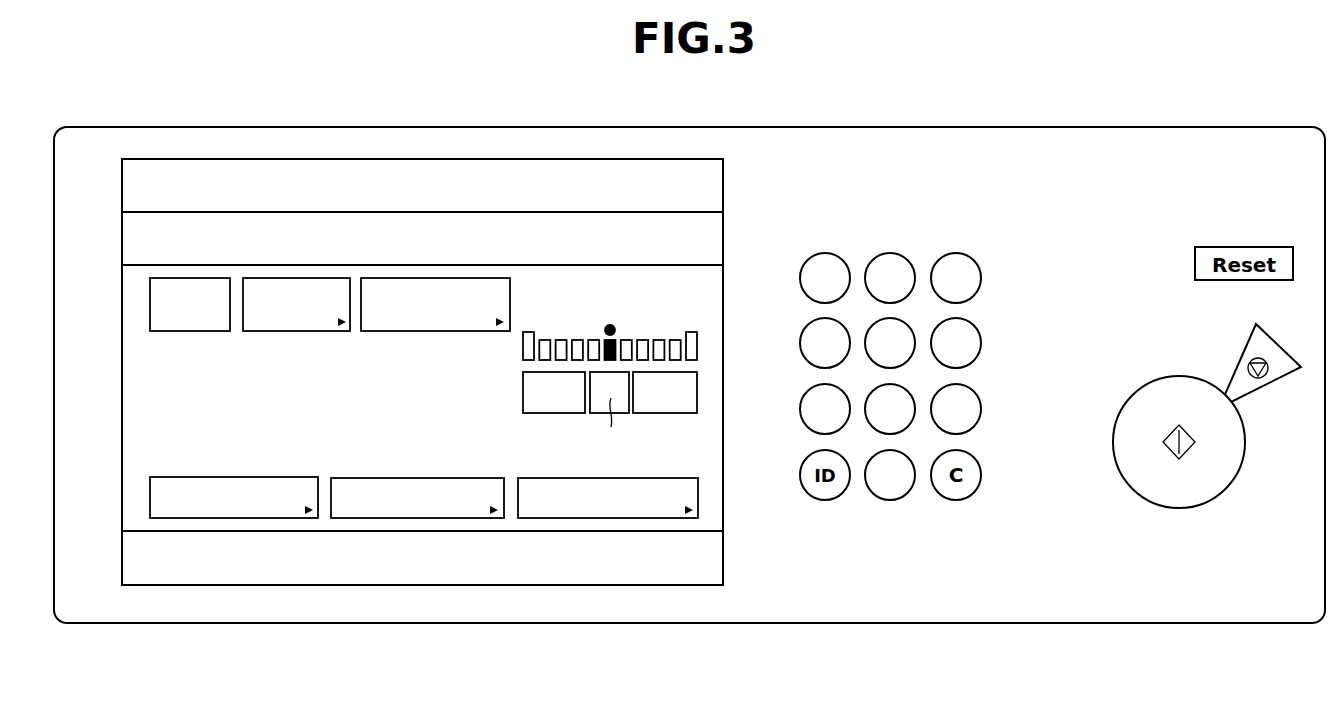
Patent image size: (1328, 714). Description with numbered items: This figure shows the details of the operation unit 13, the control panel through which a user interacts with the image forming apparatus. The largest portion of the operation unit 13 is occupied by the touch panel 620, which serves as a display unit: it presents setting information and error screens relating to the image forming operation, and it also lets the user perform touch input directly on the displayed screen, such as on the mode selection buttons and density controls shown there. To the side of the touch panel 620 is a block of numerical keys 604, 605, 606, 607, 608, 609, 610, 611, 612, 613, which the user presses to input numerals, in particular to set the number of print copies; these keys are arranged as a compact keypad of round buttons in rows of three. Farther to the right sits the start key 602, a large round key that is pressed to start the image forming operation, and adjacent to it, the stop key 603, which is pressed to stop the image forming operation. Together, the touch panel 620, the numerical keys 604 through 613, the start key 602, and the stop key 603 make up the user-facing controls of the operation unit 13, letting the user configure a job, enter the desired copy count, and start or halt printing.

The operation unit 13 is at (401, 116).
The touch panel 620 is at (547, 158).
The start key 602 is at (1180, 508).
The stop key 603 is at (1233, 363).
The numerical key 604 is at (825, 253).
The numerical key 605 is at (890, 253).
The numerical key 606 is at (956, 253).
The numerical key 607 is at (802, 333).
The numerical key 608 is at (905, 323).
The numerical key 609 is at (980, 343).
The numerical key 610 is at (802, 400).
The numerical key 611 is at (905, 428).
The numerical key 612 is at (980, 409).
The numerical key 613 is at (888, 500).